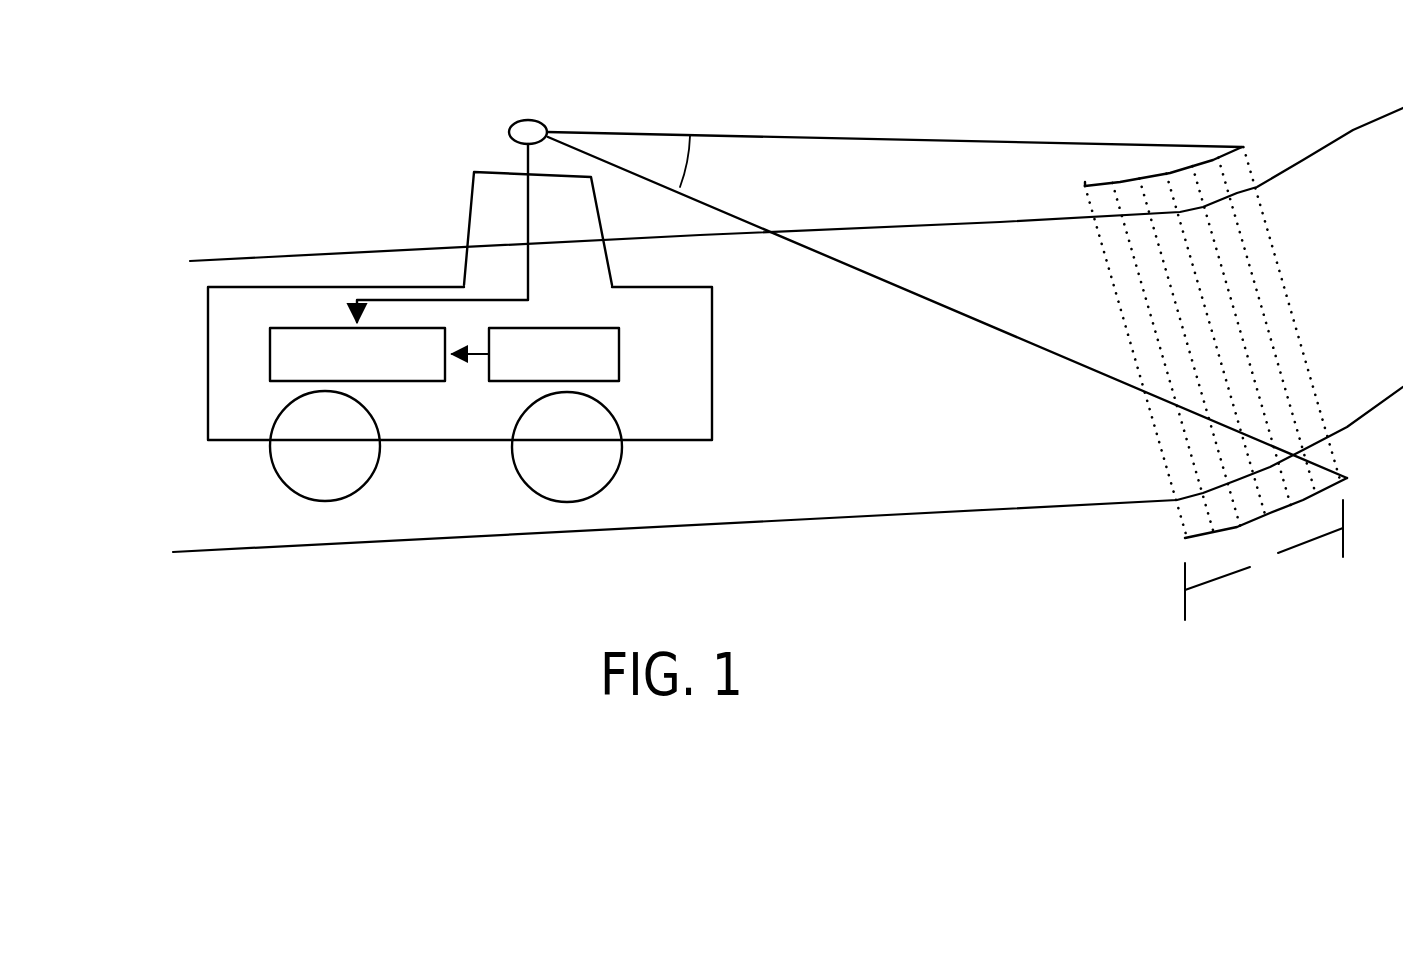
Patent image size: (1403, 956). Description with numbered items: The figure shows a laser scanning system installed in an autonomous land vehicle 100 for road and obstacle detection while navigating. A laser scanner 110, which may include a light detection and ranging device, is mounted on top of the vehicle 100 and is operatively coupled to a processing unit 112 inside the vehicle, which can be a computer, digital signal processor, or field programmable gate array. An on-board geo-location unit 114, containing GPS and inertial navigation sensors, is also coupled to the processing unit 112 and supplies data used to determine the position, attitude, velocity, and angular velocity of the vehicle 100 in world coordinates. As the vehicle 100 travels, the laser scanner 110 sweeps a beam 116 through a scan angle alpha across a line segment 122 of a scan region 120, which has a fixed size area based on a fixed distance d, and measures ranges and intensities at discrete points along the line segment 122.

The autonomous land vehicle 100 is at (152, 314).
The laser scanner 110 is at (509, 132).
The processing unit 112 is at (270, 353).
The geo-location unit 114 is at (619, 360).
The beam 116 is at (854, 139).
The scan region 120 is at (1118, 414).
The line segment 122 is at (1302, 335).